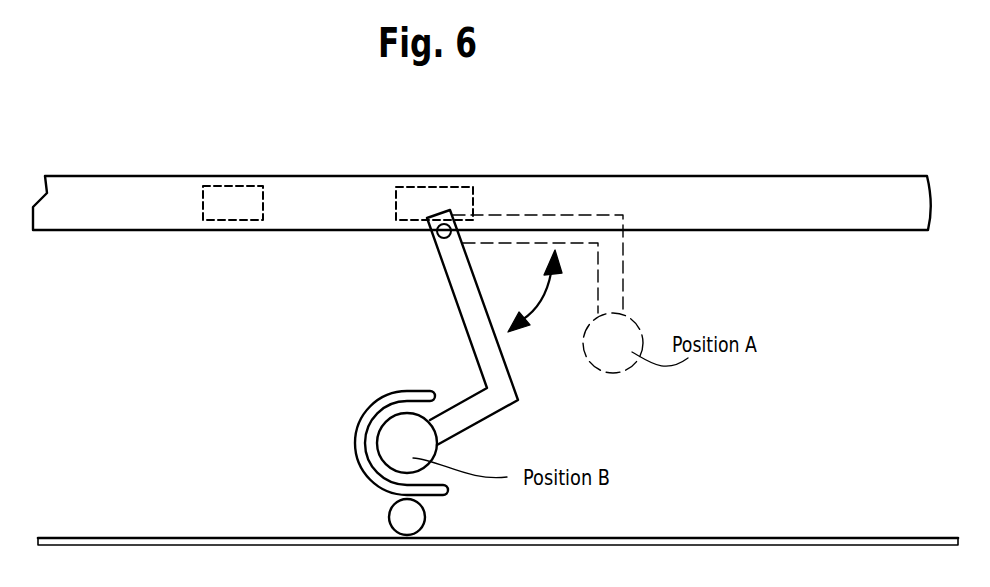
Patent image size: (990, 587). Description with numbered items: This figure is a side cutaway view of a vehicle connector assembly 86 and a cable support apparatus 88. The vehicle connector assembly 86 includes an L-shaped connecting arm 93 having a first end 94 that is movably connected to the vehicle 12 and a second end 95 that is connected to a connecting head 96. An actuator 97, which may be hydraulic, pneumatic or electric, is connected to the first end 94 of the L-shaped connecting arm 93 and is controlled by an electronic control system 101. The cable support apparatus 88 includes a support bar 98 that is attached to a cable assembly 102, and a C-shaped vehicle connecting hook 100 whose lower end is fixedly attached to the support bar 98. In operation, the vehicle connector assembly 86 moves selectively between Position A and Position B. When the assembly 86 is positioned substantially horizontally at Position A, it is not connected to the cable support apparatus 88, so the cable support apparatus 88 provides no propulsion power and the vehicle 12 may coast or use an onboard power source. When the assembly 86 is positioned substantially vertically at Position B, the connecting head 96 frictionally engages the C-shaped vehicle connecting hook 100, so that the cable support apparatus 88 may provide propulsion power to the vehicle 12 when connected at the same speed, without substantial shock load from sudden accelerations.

The vehicle 12 is at (148, 230).
The vehicle connector assembly 86 is at (406, 327).
The cable support apparatus 88 is at (358, 459).
The L-shaped connecting arm 93 is at (478, 345).
The first end 94 is at (436, 233).
The second end 95 is at (440, 448).
The connecting head 96 is at (367, 439).
The actuator 97 is at (465, 202).
The support bar 98 is at (400, 516).
The vehicle connecting hook 100 is at (357, 447).
The electronic control system 101 is at (221, 204).
The cable assembly 102 is at (530, 538).